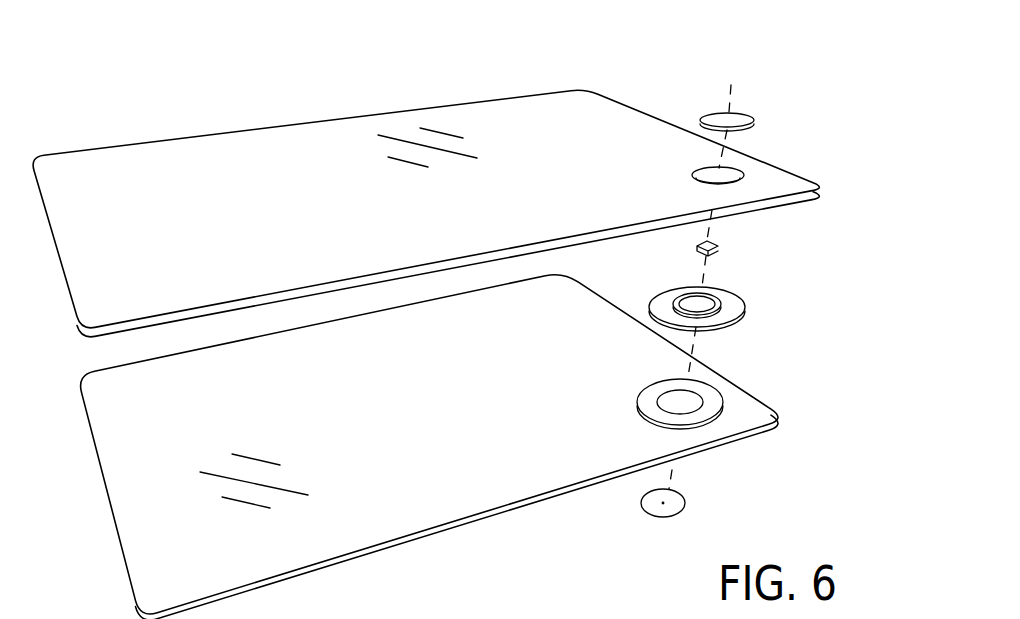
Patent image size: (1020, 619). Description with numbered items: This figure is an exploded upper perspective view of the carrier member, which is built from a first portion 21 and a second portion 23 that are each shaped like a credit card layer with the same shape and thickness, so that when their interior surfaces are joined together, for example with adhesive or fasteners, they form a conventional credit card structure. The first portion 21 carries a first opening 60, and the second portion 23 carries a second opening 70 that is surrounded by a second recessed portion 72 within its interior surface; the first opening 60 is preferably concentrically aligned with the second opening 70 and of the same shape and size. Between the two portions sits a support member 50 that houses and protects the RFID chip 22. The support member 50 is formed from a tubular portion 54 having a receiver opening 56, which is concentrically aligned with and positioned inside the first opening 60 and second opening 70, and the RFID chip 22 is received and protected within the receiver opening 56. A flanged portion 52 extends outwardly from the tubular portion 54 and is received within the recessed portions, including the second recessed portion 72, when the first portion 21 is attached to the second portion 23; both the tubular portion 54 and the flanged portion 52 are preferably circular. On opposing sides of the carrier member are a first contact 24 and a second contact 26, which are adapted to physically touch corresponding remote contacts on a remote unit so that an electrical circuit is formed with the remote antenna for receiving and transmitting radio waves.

The first portion 21 is at (371, 112).
The second portion 23 is at (477, 522).
The first contact 24 is at (727, 118).
The first opening 60 is at (733, 172).
The RFID chip 22 is at (717, 248).
The support member 50 is at (752, 320).
The flanged portion 52 is at (717, 313).
The tubular portion 54 is at (727, 318).
The receiver opening 56 is at (708, 290).
The second opening 70 is at (705, 414).
The second recessed portion 72 is at (703, 405).
The second contact 26 is at (685, 502).